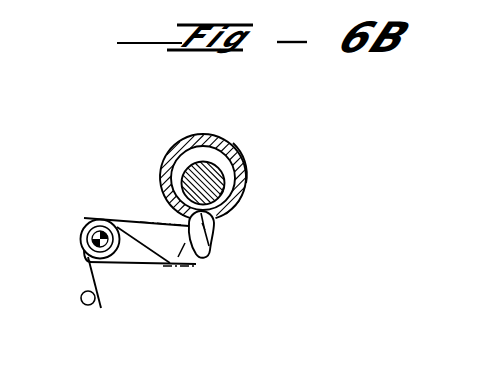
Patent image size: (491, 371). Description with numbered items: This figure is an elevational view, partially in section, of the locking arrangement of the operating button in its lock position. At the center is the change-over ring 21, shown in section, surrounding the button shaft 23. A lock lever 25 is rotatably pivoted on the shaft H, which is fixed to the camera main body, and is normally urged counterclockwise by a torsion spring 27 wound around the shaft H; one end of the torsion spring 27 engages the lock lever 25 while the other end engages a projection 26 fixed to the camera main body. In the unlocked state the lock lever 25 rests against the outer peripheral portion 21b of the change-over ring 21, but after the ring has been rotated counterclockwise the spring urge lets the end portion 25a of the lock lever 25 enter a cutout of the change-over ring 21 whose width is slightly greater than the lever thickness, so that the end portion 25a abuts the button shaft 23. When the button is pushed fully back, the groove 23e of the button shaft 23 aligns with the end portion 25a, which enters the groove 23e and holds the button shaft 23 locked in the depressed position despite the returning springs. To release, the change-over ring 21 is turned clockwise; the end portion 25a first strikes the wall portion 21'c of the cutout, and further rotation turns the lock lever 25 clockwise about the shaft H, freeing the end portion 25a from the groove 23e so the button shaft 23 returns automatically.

The change-over ring 21 is at (177, 167).
The outer peripheral portion 21b is at (243, 151).
The wall portion 21'c is at (250, 233).
The button shaft 23 is at (200, 170).
The groove 23e is at (232, 188).
The lock lever 25 is at (192, 251).
The end portion 25a is at (212, 247).
The projection 26 is at (91, 305).
The torsion spring 27 is at (89, 265).
The shaft H is at (99, 230).